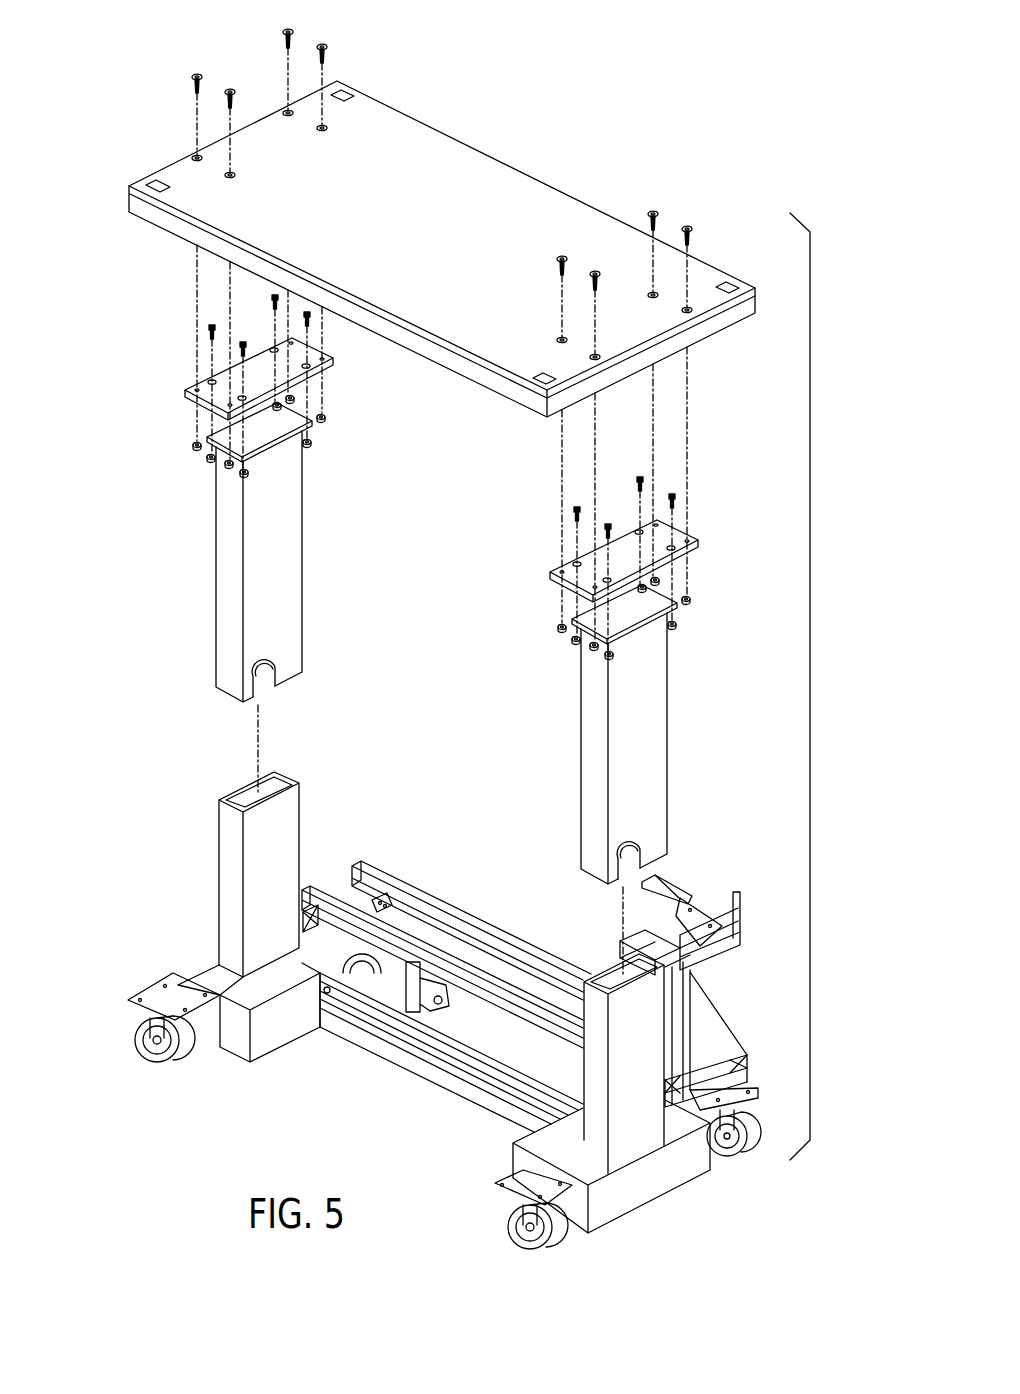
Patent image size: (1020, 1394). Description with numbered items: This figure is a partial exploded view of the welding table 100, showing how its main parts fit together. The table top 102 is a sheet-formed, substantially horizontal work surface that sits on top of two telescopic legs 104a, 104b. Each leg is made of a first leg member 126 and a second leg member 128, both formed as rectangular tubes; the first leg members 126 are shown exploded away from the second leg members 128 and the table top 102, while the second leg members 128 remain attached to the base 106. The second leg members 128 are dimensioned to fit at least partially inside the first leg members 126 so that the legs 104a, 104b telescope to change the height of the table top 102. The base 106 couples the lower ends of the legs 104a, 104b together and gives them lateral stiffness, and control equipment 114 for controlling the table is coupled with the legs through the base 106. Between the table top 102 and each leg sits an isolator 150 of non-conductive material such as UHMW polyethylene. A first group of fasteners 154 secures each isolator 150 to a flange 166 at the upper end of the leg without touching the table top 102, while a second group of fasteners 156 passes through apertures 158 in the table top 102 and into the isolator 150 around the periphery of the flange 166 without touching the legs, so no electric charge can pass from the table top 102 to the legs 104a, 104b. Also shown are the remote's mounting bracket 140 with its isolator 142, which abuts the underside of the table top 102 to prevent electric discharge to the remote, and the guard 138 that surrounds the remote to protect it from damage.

The welding table 100 is at (573, 82).
The table top 102 is at (470, 165).
The leg 104a is at (197, 623).
The leg 104b is at (563, 752).
The base 106 is at (436, 874).
The control equipment 114 is at (604, 943).
The first leg member 126 is at (284, 558).
The second leg member 128 is at (287, 835).
The guard 138 is at (738, 921).
The mounting bracket 140 is at (697, 903).
The isolator 142 is at (670, 882).
The isolator 150 is at (310, 378).
The first group of fasteners 154 is at (209, 331).
The second group of fasteners 156 is at (194, 82).
The apertures 158 is at (194, 155).
The flange 166 is at (283, 448).